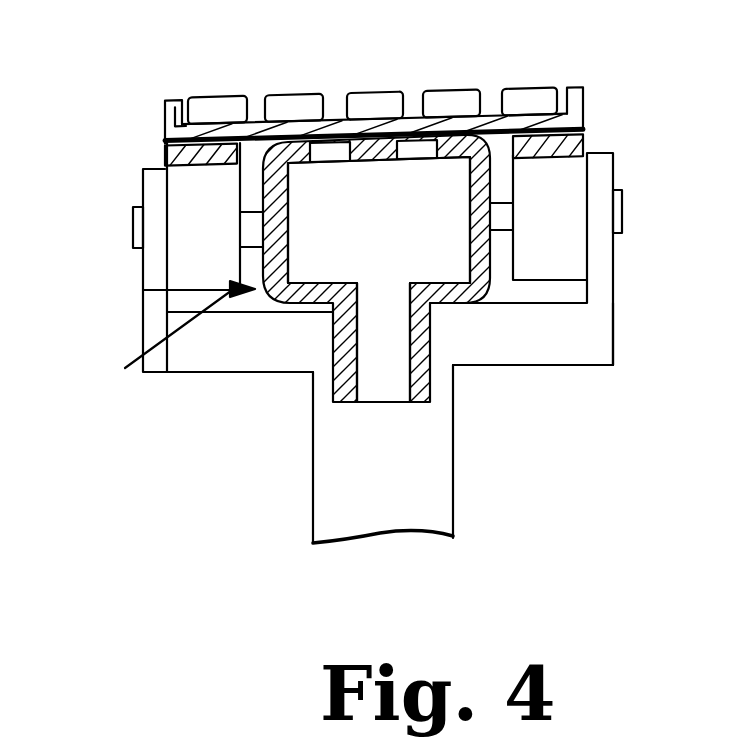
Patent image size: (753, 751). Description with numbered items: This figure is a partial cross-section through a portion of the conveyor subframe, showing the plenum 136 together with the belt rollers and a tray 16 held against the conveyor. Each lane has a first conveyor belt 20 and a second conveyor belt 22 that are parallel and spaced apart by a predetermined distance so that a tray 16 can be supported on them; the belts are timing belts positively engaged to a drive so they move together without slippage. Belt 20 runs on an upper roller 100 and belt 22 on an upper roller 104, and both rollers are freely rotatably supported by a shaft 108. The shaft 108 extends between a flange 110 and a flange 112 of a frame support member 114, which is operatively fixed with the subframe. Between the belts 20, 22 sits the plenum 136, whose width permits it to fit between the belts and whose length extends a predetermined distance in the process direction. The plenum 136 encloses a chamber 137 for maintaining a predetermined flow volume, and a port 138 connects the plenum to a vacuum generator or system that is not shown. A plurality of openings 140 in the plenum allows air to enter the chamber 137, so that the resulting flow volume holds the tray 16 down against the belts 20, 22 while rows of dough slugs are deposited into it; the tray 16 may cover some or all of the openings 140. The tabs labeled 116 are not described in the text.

The tray 16 is at (583, 93).
The first conveyor belt 20 is at (160, 153).
The second conveyor belt 22 is at (590, 141).
The upper roller 100 is at (187, 200).
The upper roller 104 is at (577, 183).
The shaft 108 is at (513, 155).
The flange 110 is at (606, 327).
The flange 112 is at (147, 290).
The frame support member 114 is at (597, 357).
The mounting tab 116 is at (133, 216).
The plenum 136 is at (156, 342).
The chamber 137 is at (373, 177).
The port 138 is at (385, 400).
The openings 140 is at (338, 233).